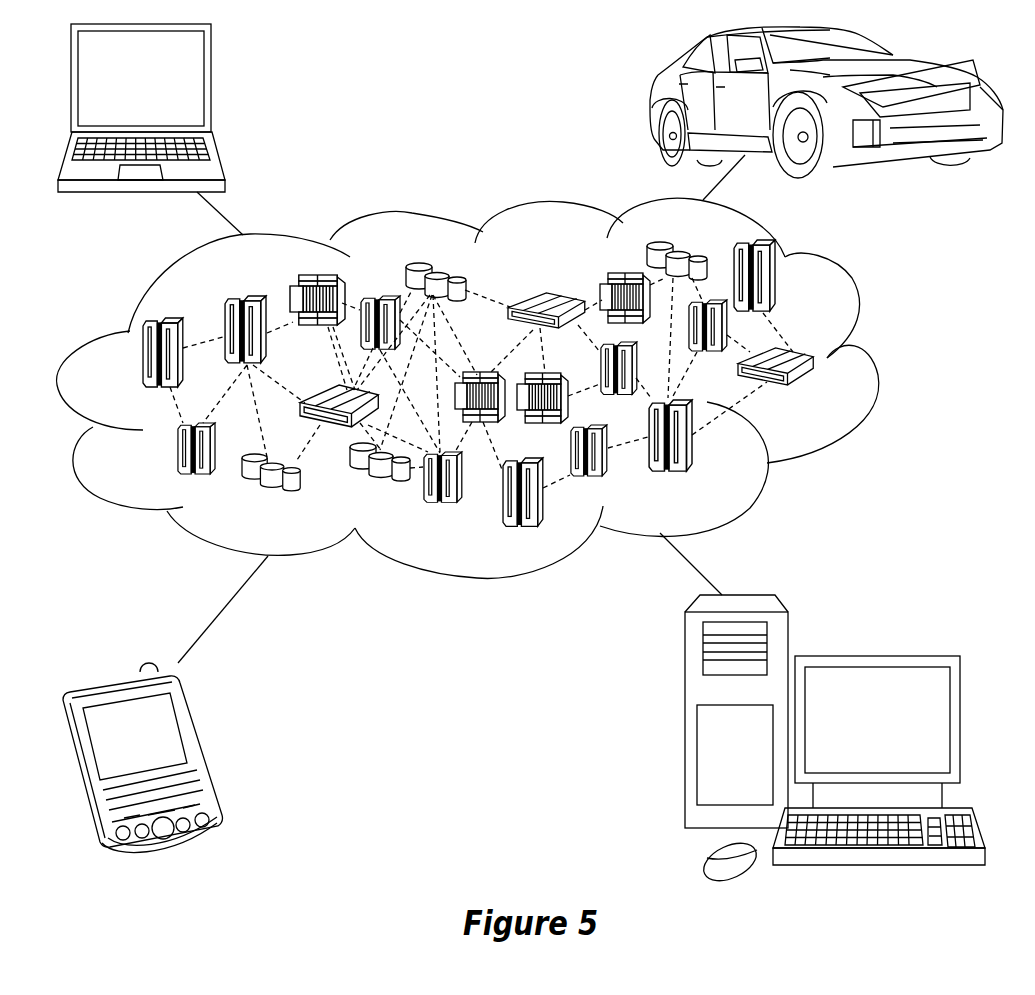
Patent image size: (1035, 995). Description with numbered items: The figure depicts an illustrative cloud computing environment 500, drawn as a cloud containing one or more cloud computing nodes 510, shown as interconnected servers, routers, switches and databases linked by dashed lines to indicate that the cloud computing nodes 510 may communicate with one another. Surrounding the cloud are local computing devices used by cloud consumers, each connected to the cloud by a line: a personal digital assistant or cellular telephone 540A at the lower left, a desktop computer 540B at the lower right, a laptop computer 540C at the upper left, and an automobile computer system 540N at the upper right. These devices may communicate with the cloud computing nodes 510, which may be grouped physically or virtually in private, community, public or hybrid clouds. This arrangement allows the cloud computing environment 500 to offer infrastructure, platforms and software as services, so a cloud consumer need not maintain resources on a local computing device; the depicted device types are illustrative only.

The cloud computing environment 500 is at (877, 360).
The cloud computing nodes 510 is at (816, 392).
The personal digital assistant (PDA) or cellular telephone 540A is at (202, 748).
The desktop computer 540B is at (874, 656).
The laptop computer 540C is at (211, 86).
The automobile computer system 540N is at (655, 100).